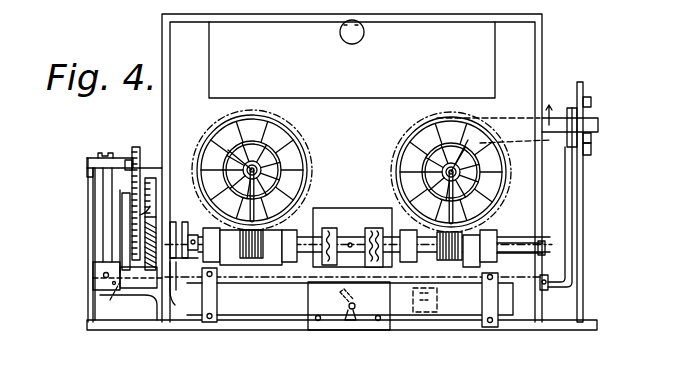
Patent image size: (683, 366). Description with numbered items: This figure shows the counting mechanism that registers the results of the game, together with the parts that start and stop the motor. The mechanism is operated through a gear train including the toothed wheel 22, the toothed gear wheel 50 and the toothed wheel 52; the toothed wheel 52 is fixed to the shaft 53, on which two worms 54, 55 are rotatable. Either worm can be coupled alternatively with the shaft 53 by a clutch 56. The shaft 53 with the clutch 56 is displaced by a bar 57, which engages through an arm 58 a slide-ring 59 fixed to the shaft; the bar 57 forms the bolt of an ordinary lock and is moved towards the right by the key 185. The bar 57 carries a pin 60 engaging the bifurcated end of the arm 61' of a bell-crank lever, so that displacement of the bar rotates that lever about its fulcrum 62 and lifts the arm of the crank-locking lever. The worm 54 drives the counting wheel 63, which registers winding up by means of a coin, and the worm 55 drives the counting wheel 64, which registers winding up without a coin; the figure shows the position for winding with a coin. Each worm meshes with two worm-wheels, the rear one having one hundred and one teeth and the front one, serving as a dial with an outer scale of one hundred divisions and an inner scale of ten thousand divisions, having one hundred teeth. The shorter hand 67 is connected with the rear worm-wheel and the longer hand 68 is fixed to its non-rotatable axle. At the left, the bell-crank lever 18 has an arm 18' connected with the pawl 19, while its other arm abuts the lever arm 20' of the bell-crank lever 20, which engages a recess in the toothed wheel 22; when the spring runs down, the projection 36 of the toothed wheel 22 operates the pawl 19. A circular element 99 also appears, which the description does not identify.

The indicator lamp 99 is at (340, 33).
The counting wheel 63 is at (247, 124).
The shorter hand 67 is at (228, 150).
The counting wheel 64 is at (443, 128).
The fulcrum 62 is at (433, 118).
The longer hand 68 is at (397, 190).
The arm of bell-crank lever 61' is at (494, 226).
The pawl 19 is at (105, 163).
The arm of bell-crank lever 18' is at (89, 244).
The projection 36 is at (128, 158).
The toothed wheel 22 is at (136, 150).
The toothed wheel 52 is at (150, 262).
The toothed gear wheel 50 is at (140, 215).
The bell-crank lever 18 is at (110, 276).
The bell-crank lever 20 is at (107, 301).
The lever arm 20' is at (164, 308).
The slide-ring 59 is at (185, 234).
The arm 58 is at (182, 262).
The bar 57 is at (248, 300).
The worm 54 is at (275, 250).
The clutch 56 is at (340, 246).
The key 185 is at (356, 312).
The pin 60 is at (428, 293).
The worm 55 is at (473, 250).
The shaft 53 is at (522, 248).